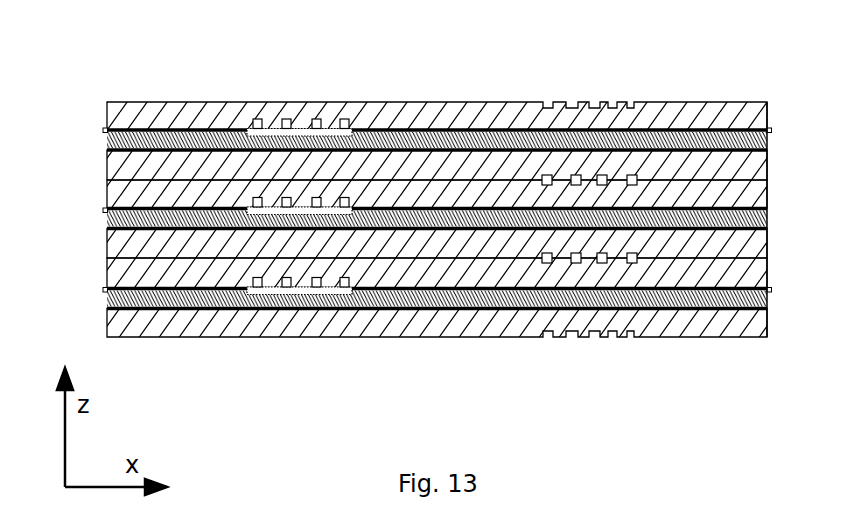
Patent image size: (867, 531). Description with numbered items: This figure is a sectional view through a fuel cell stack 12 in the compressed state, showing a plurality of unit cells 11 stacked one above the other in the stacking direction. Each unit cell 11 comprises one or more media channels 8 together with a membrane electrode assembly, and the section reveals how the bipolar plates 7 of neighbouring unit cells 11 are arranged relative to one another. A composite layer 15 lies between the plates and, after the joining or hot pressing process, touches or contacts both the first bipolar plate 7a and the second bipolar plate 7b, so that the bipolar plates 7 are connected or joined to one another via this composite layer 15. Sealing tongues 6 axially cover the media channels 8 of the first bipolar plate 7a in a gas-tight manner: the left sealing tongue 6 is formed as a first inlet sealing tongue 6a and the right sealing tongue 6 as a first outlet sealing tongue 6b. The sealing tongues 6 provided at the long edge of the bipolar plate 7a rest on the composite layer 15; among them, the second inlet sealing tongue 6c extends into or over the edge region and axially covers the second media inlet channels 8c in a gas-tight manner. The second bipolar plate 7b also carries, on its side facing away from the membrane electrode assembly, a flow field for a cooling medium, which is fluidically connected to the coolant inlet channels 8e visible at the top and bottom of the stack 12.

The fuel cell stack 12 is at (694, 90).
The unit cell 11 is at (762, 124).
The bipolar plate 7 is at (401, 218).
The first bipolar plate 7a is at (153, 323).
The second bipolar plate 7b is at (146, 277).
The sealing tongue 6 is at (430, 195).
The first inlet sealing tongue 6a is at (107, 290).
The first outlet sealing tongue 6b is at (772, 291).
The second inlet sealing tongue 6c is at (348, 284).
The composite layer 15 is at (470, 293).
The media channel 8 is at (426, 220).
The second media inlet channel 8c is at (288, 278).
The coolant inlet channel 8e is at (607, 262).